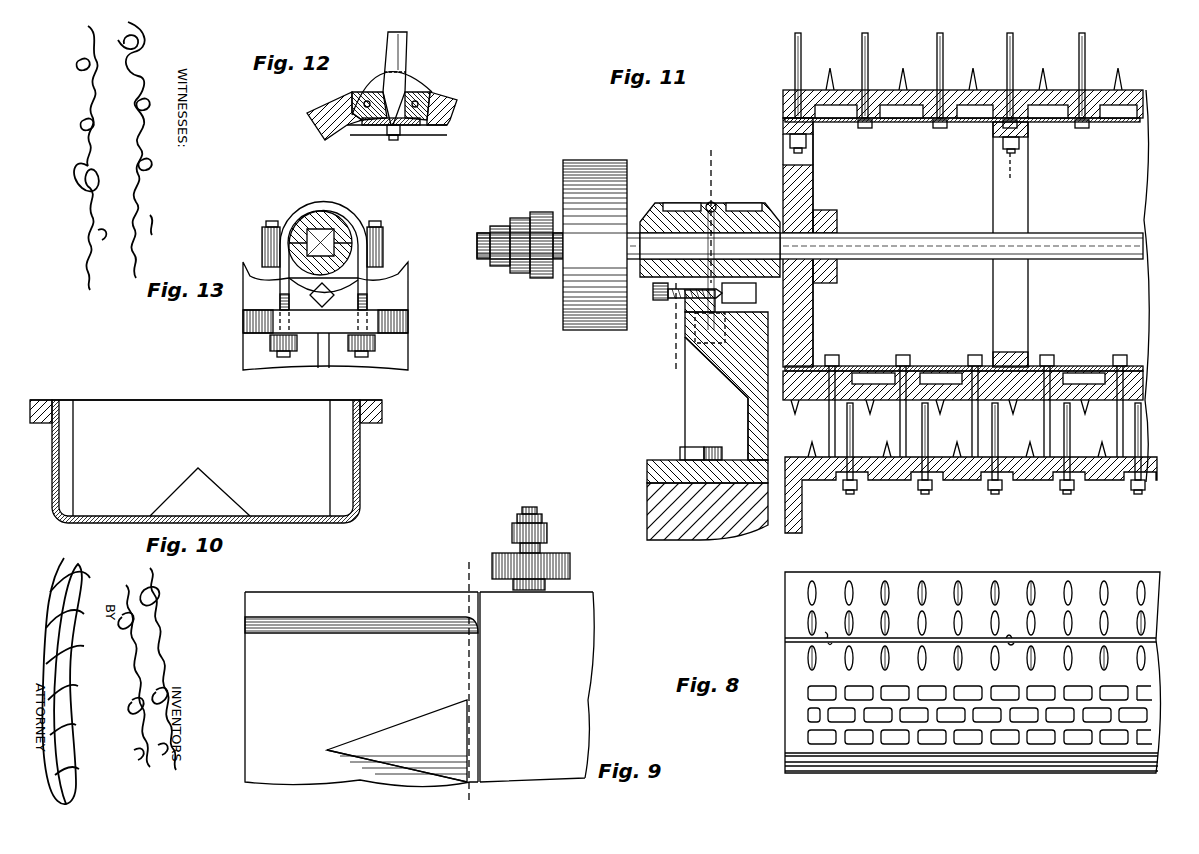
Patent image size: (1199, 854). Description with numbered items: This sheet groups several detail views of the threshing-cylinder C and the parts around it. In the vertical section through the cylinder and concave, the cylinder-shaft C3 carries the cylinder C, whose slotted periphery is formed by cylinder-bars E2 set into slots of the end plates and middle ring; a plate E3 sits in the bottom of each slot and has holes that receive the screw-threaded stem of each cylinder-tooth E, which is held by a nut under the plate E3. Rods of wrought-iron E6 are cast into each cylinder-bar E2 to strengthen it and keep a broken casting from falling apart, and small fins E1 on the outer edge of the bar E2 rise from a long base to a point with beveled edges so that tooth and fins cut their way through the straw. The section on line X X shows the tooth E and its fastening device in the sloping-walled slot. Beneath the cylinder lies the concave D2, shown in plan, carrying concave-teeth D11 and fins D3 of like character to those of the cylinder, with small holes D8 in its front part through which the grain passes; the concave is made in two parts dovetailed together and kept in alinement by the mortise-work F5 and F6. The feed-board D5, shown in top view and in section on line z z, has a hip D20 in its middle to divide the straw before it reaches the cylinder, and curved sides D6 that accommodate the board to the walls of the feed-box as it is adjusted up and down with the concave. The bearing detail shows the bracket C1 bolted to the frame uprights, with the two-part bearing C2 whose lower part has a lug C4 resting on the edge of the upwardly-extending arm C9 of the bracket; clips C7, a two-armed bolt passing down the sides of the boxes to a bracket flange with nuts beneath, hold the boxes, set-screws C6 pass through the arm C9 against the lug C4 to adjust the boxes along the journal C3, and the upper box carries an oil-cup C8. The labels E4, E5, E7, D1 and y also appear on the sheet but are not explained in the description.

In FIG. 12, the cylinder-tooth E is at (408, 52).
In FIG. 11, the cylinder-tooth E is at (920, 422).
In FIG. 12, the fins E1 is at (412, 84).
In FIG. 11, the fins E1 is at (905, 76).
In FIG. 12, the cylinder-bar E2 is at (348, 135).
In FIG. 11, the cylinder-bar E2 is at (972, 118).
In FIG. 12, the plate E3 is at (412, 128).
In FIG. 11, the plate E3 is at (918, 122).
In FIG. 12, the die block E4 is at (447, 123).
In FIG. 12, the nut E5 is at (366, 127).
In FIG. 11, the nut E5 is at (866, 128).
In FIG. 12, the wrought-iron rods E6 is at (356, 98).
In FIG. 11, the frame side E7 is at (1115, 122).
In FIG. 11, the threshing-cylinder C is at (813, 181).
In FIG. 13, the bracket C1 is at (325, 316).
In FIG. 11, the bracket C1 is at (745, 400).
In FIG. 13, the bearings C2 is at (312, 210).
In FIG. 11, the bearings C2 is at (745, 203).
In FIG. 13, the cylinder-shaft C3 is at (336, 235).
In FIG. 9, the cylinder-shaft C3 is at (565, 588).
In FIG. 11, the cylinder-shaft C3 is at (952, 233).
In FIG. 13, the lug C4 is at (384, 242).
In FIG. 11, the lug C4 is at (732, 285).
In FIG. 13, the set-screws C6 is at (318, 308).
In FIG. 11, the set-screws C6 is at (655, 302).
In FIG. 13, the clips C7 is at (330, 226).
In FIG. 11, the clips C7 is at (718, 203).
In FIG. 11, the oil-cups C8 is at (680, 203).
In FIG. 13, the arm of bracket C9 is at (345, 290).
In FIG. 11, the arm of bracket C9 is at (700, 310).
In FIG. 9, the side wall D1 is at (481, 672).
In FIG. 8, the concave D2 is at (1065, 592).
In FIG. 11, the concave D2 is at (1018, 482).
In FIG. 8, the fins of concave D3 is at (890, 592).
In FIG. 11, the fins of concave D3 is at (892, 462).
In FIG. 10, the feed-board D5 is at (59, 451).
In FIG. 9, the feed-board D5 is at (361, 689).
In FIG. 10, the curved sides D6 is at (360, 464).
In FIG. 9, the curved sides D6 is at (382, 634).
In FIG. 8, the small holes D8 is at (815, 696).
In FIG. 8, the tooth of the concave D11 is at (962, 590).
In FIG. 11, the tooth of the concave D11 is at (925, 435).
In FIG. 10, the hip D20 is at (216, 498).
In FIG. 9, the hip D20 is at (400, 745).
In FIG. 8, the mortise-work F5 is at (822, 637).
In FIG. 8, the mortise-work F6 is at (826, 643).
In FIG. 11, the section line X X is at (1011, 108).
In FIG. 11, the section line y is at (689, 264).
In FIG. 9, the section line Z Z z is at (470, 680).